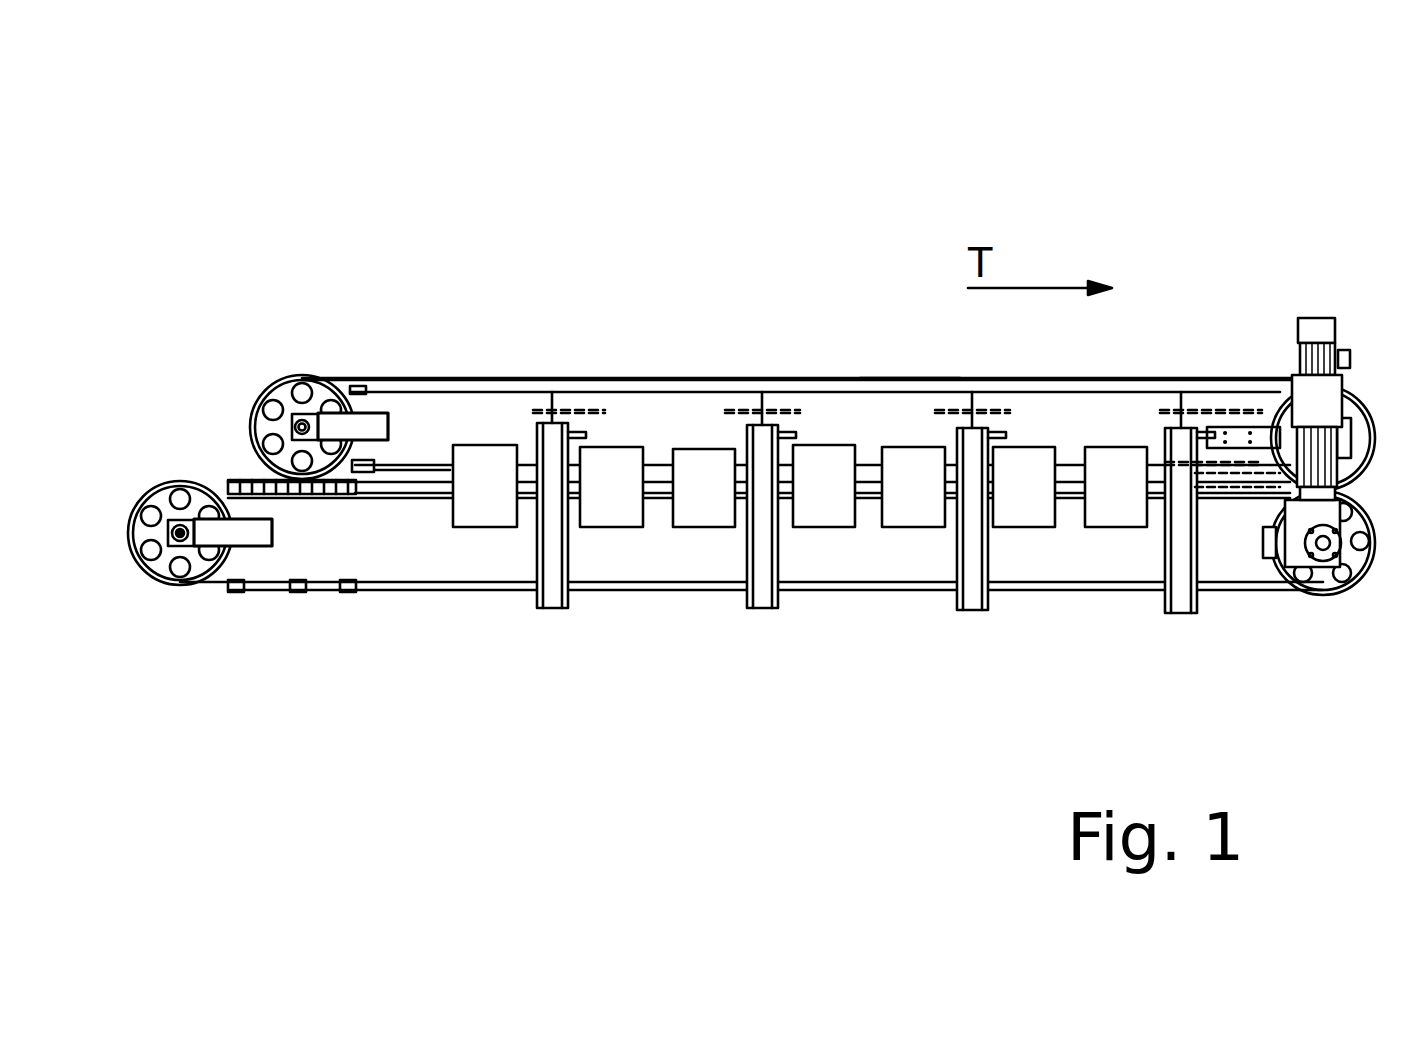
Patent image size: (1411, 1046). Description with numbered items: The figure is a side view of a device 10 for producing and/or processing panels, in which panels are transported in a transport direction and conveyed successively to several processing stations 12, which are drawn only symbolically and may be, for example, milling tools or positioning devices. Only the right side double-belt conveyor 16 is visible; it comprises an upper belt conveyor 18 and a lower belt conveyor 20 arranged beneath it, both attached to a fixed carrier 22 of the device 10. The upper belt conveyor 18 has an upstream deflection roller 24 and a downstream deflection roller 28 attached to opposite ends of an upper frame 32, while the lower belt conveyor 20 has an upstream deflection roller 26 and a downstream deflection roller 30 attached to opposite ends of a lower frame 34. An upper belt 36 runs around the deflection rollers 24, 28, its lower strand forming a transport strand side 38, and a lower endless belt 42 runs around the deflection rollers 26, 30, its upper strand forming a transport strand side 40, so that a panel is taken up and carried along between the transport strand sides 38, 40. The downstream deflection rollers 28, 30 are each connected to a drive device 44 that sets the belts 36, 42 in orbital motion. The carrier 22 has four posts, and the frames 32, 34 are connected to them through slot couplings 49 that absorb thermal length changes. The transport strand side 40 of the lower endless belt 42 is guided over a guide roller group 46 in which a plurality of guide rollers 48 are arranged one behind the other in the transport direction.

The device for producing and/or processing panels 10 is at (210, 222).
The processing stations 12 is at (483, 462).
The right side double-belt conveyor 16 is at (832, 375).
The upper belt conveyor 18 is at (904, 376).
The lower belt conveyor 20 is at (846, 598).
The carrier 22 is at (560, 560).
The upstream deflection roller 24 is at (283, 382).
The upstream deflection roller 26 is at (160, 505).
The downstream deflection roller 28 is at (1292, 400).
The downstream deflection roller 30 is at (1293, 567).
The upper frame 32 is at (437, 413).
The lower frame 34 is at (420, 557).
The upper belt 36 is at (603, 380).
The transport strand side 38 is at (401, 479).
The transport strand side 40 is at (430, 485).
The lower endless belt 42 is at (665, 590).
The drive device 44 is at (1330, 408).
The guide roller group 46 is at (313, 514).
The guide rollers 48 is at (230, 480).
The slot coupling 49 is at (786, 435).